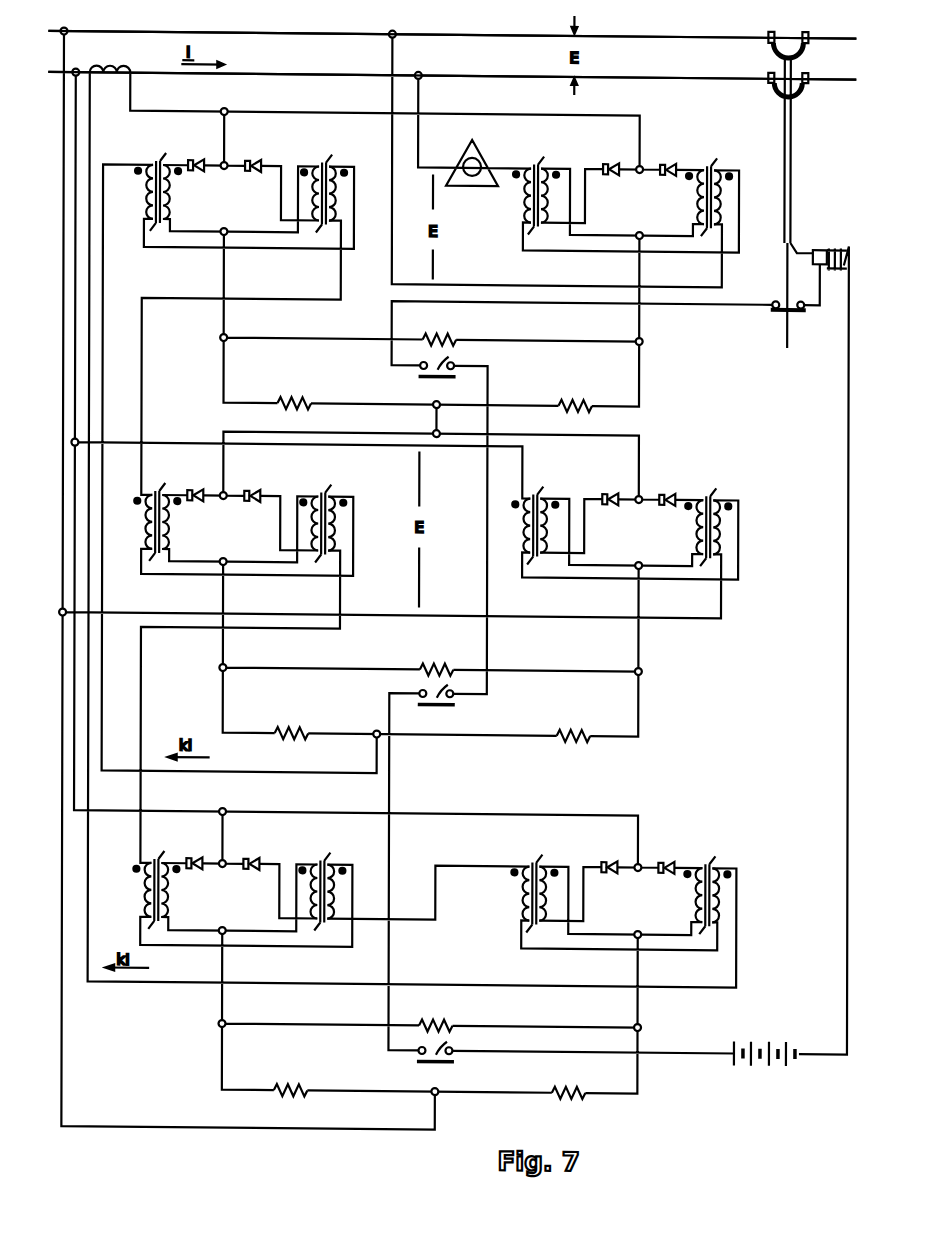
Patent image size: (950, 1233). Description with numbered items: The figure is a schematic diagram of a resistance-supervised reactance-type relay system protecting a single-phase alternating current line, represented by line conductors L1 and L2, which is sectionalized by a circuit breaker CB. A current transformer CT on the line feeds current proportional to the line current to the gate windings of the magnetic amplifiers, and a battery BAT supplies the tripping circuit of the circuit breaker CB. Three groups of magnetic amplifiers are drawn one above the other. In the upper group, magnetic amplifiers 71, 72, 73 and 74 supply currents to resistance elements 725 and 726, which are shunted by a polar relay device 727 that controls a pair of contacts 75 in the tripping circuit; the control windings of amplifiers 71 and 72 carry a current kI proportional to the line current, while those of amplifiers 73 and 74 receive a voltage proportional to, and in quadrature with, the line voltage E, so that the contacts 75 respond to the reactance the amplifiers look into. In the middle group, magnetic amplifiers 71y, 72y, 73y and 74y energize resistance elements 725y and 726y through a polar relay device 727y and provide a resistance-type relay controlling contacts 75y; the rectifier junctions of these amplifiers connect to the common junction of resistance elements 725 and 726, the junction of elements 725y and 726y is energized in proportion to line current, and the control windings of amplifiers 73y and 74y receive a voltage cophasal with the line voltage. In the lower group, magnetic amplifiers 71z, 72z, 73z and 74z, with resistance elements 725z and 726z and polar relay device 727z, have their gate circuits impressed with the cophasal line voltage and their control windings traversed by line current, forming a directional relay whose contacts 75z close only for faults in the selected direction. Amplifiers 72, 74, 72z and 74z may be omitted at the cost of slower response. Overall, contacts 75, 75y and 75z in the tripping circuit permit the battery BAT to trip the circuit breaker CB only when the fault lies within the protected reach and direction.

The line conductor L1 is at (325, 32).
The line conductor L2 is at (326, 74).
The current transformer CT is at (112, 62).
The circuit breaker CB is at (780, 37).
The battery BAT is at (750, 1042).
The magnetic amplifier 71 is at (156, 161).
The magnetic amplifier 72 is at (322, 158).
The magnetic amplifier 73 is at (540, 158).
The magnetic amplifier 74 is at (710, 162).
The contacts 75 is at (454, 366).
The resistance element 725 is at (302, 411).
The resistance element 726 is at (552, 412).
The polar relay device 727 is at (428, 337).
The magnetic amplifier 71y is at (163, 489).
The magnetic amplifier 72y is at (330, 488).
The magnetic amplifier 73y is at (540, 490).
The magnetic amplifier 74y is at (706, 495).
The contacts 75y is at (450, 693).
The resistance element 725y is at (302, 742).
The resistance element 726y is at (572, 748).
The polar relay device 727y is at (432, 664).
The magnetic amplifier 71z is at (160, 860).
The magnetic amplifier 72z is at (328, 858).
The magnetic amplifier 73z is at (540, 862).
The magnetic amplifier 74z is at (705, 862).
The contacts 75z is at (452, 1050).
The resistance element 725z is at (300, 1098).
The resistance element 726z is at (568, 1106).
The polar relay device 727z is at (433, 1022).